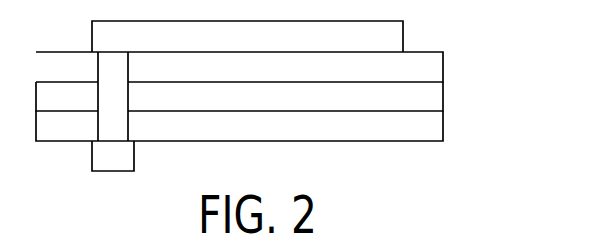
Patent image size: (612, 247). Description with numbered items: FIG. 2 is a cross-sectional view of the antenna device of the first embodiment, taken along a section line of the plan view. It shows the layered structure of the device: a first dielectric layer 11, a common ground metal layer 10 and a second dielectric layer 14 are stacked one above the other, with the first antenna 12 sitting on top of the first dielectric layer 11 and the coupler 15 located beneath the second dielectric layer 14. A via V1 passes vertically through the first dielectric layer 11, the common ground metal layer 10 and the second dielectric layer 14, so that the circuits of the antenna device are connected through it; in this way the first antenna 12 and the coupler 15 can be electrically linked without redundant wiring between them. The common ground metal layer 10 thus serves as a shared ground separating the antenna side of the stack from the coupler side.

The common ground metal layer 10 is at (443, 97).
The first dielectric layer 11 is at (443, 67).
The first antenna 12 is at (403, 38).
The second dielectric layer 14 is at (443, 128).
The coupler 15 is at (134, 157).
The via V1 is at (117, 70).